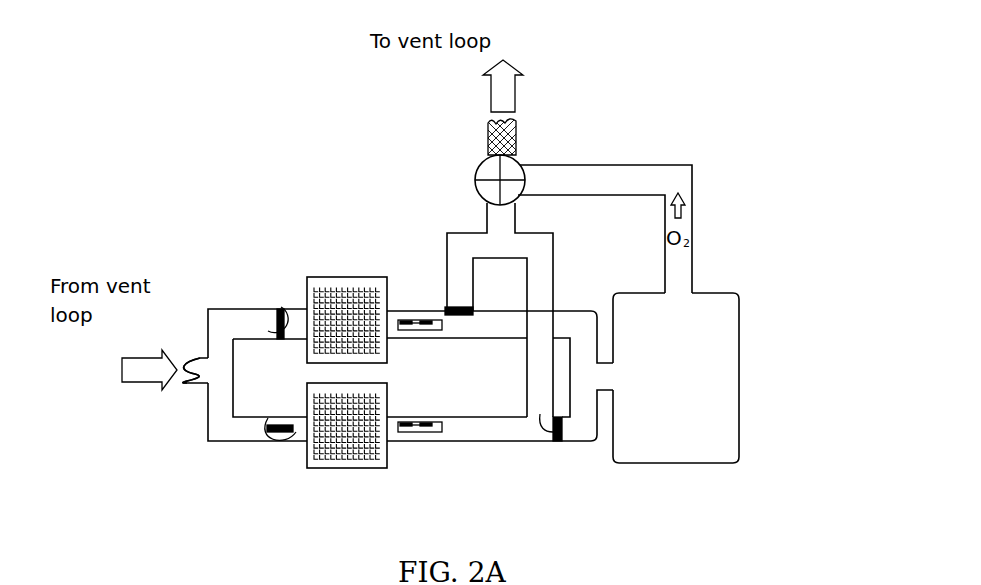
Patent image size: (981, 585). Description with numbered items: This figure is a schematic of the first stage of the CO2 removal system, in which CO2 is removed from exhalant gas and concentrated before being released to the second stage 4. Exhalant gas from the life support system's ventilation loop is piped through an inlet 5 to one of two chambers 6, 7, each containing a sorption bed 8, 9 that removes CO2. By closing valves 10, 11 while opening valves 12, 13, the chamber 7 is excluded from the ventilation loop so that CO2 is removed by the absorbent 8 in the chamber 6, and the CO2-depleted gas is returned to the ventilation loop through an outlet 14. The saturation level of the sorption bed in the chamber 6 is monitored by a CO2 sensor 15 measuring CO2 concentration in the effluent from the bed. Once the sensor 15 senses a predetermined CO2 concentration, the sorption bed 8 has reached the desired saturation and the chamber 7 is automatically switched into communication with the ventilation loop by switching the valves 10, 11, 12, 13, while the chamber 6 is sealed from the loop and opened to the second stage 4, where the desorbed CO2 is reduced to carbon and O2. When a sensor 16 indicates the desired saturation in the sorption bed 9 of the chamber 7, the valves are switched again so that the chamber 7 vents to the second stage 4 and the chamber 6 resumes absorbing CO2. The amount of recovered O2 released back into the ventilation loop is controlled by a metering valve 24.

The second stage 4 is at (717, 305).
The inlet 5 is at (200, 362).
The chamber 6 is at (352, 470).
The chamber 7 is at (374, 282).
The sorption bed 8 is at (328, 448).
The sorption bed 9 is at (340, 290).
The valve 10 is at (277, 315).
The valve 11 is at (445, 307).
The valve 12 is at (270, 435).
The valve 13 is at (536, 444).
The outlet 14 is at (497, 220).
The CO2 sensor 15 is at (420, 434).
The sensor 16 is at (420, 332).
The metering valve 24 is at (478, 168).